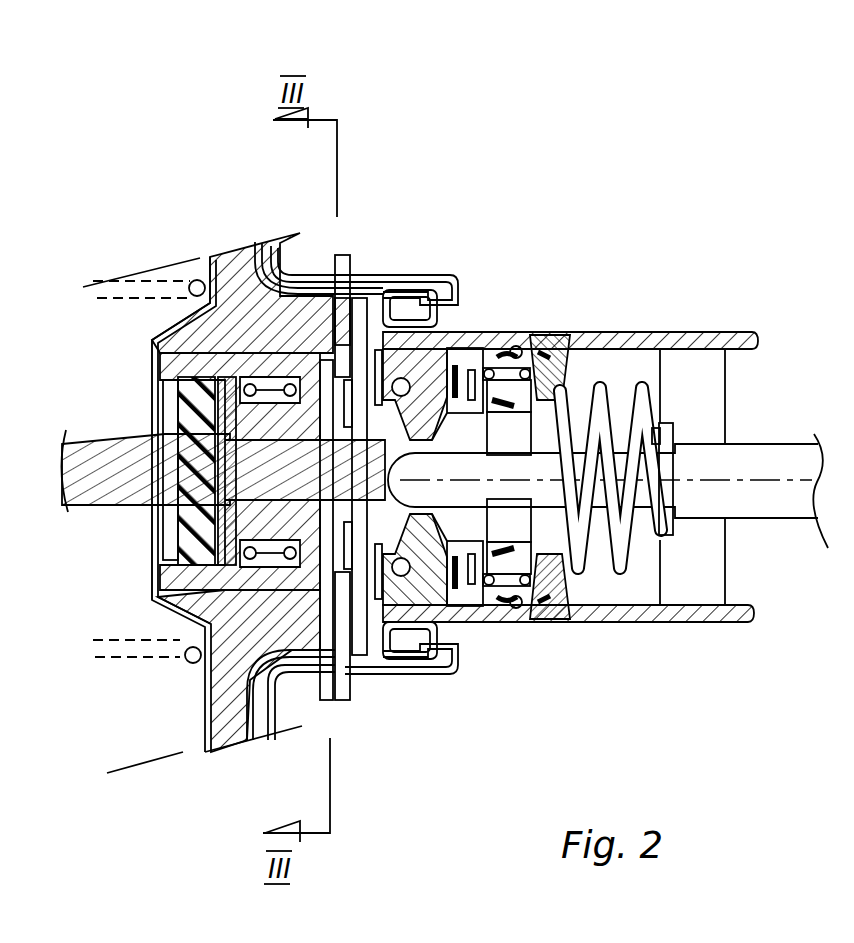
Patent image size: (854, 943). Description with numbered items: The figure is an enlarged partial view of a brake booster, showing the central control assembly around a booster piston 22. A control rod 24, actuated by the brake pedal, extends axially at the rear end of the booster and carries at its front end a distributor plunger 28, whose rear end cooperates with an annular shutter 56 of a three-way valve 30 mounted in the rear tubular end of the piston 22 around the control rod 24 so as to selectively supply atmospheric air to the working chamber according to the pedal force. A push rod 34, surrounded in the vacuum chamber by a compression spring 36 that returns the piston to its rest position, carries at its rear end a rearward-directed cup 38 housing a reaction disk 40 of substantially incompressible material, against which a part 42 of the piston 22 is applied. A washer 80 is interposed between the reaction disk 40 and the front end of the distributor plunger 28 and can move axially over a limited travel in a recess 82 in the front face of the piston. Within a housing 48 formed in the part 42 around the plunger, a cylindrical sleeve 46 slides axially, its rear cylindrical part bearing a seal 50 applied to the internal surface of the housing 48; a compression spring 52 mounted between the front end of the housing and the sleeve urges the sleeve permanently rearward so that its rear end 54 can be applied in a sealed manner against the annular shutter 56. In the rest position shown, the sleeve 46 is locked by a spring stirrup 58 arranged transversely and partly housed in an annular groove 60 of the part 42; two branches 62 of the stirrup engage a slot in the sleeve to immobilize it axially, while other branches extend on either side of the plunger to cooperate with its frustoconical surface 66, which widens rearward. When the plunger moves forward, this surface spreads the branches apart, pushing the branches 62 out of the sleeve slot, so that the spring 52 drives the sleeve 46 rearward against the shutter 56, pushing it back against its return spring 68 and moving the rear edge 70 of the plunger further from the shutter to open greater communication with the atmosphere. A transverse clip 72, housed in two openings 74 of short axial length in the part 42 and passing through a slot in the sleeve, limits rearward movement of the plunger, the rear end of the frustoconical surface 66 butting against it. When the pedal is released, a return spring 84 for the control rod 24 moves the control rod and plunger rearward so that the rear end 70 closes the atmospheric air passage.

The booster piston 22 is at (205, 740).
The control rod 24 is at (774, 443).
The distributor plunger 28 is at (378, 436).
The three-way valve 30 is at (517, 346).
The push rod 34 is at (74, 508).
The compression spring 36 is at (110, 667).
The cup 38 is at (155, 382).
The reaction disk 40 is at (158, 547).
The part of the booster piston 42 is at (312, 327).
The cylindrical sleeve 46 is at (156, 583).
The housing 48 is at (262, 373).
The seal 50 is at (418, 655).
The compression spring 52 is at (220, 250).
The rear end of the sleeve 54 is at (428, 290).
The annular shutter 56 is at (462, 380).
The spring stirrup 58 is at (382, 292).
The annular groove 60 is at (333, 700).
The branches 62 is at (343, 290).
The frustoconical surface 66 is at (486, 522).
The return spring 68 is at (563, 365).
The rear edge of the distributor plunger 70 is at (490, 622).
The transverse clip 72 is at (358, 660).
The openings 74 is at (388, 680).
The washer 80 is at (190, 454).
The recess 82 is at (168, 396).
The return spring 84 is at (638, 378).